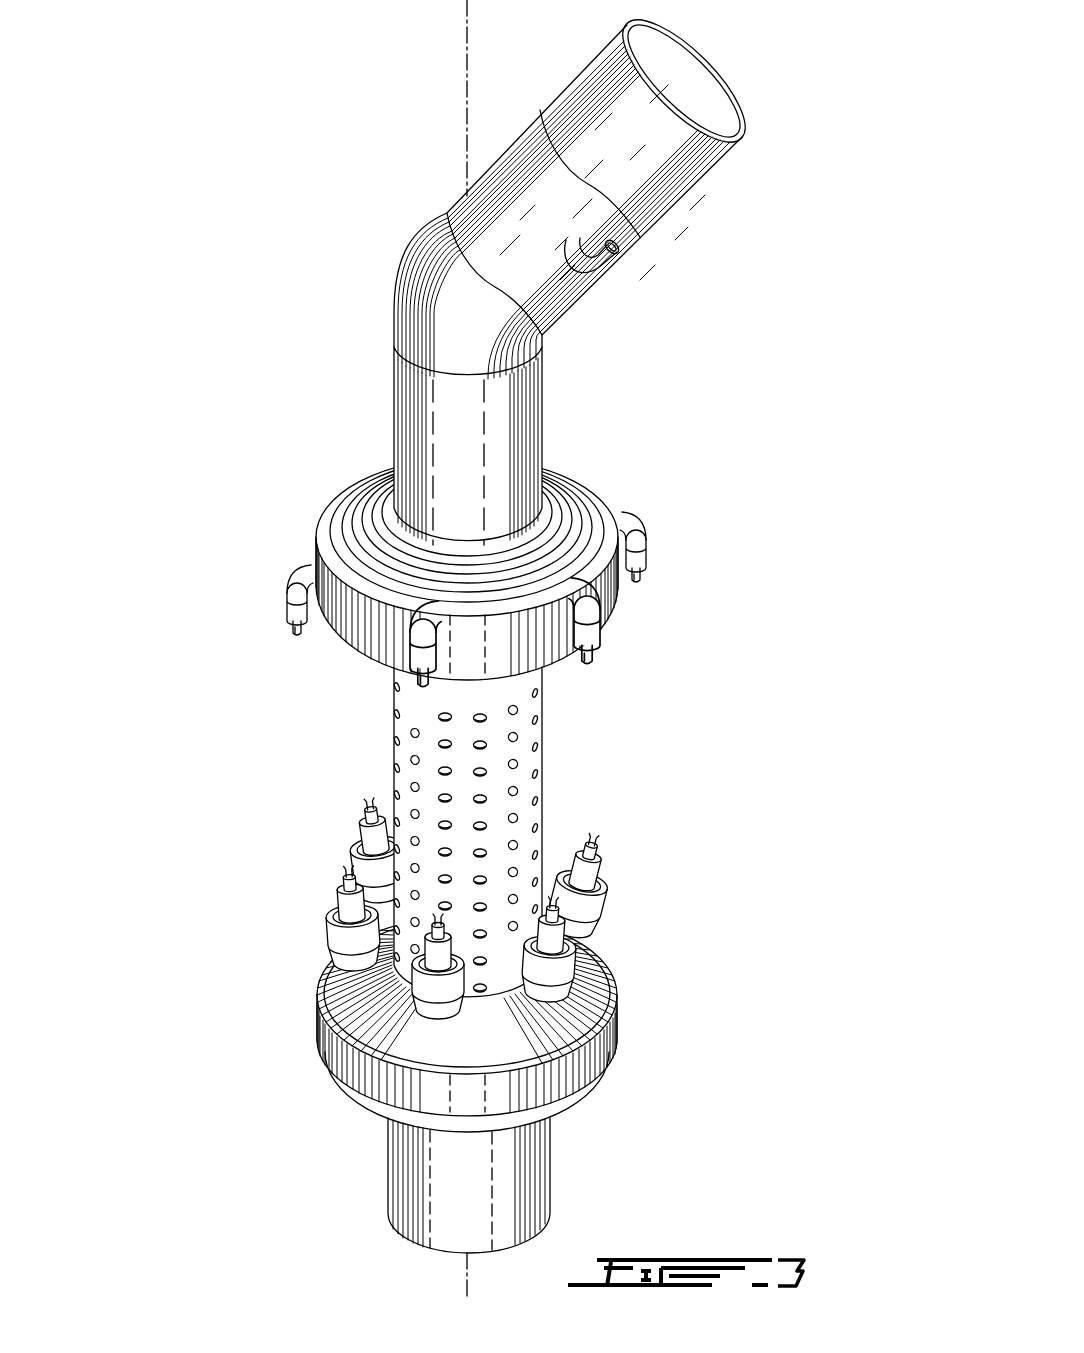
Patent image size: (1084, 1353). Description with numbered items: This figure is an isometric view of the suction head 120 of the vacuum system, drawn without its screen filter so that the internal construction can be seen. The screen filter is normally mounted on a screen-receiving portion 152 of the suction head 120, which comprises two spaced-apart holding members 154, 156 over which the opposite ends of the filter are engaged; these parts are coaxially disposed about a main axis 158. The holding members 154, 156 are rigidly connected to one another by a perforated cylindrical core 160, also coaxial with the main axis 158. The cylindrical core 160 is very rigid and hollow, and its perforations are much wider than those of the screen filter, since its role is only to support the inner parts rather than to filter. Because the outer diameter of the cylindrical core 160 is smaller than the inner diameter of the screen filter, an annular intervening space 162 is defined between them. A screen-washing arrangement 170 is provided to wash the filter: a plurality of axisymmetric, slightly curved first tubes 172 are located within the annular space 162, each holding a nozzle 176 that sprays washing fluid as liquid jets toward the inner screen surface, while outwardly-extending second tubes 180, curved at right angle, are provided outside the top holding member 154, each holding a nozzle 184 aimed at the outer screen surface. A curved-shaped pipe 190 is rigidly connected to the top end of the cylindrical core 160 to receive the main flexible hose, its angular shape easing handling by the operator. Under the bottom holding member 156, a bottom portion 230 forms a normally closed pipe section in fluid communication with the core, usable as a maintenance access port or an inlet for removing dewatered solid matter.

The suction head 120 is at (285, 283).
The screen-receiving portion 152 is at (630, 958).
The holding member 154 is at (615, 600).
The holding member 156 is at (617, 1013).
The main axis 158 is at (467, 40).
The perforated cylindrical core 160 is at (363, 860).
The annular intervening space 162 is at (440, 1040).
The screen-washing arrangement 170 is at (616, 893).
The first tube 172 is at (370, 822).
The nozzle 176 is at (593, 830).
The second tube 180 is at (632, 530).
The nozzle 184 is at (643, 577).
The curved-shaped pipe 190 is at (468, 230).
The bottom portion 230 is at (528, 1178).